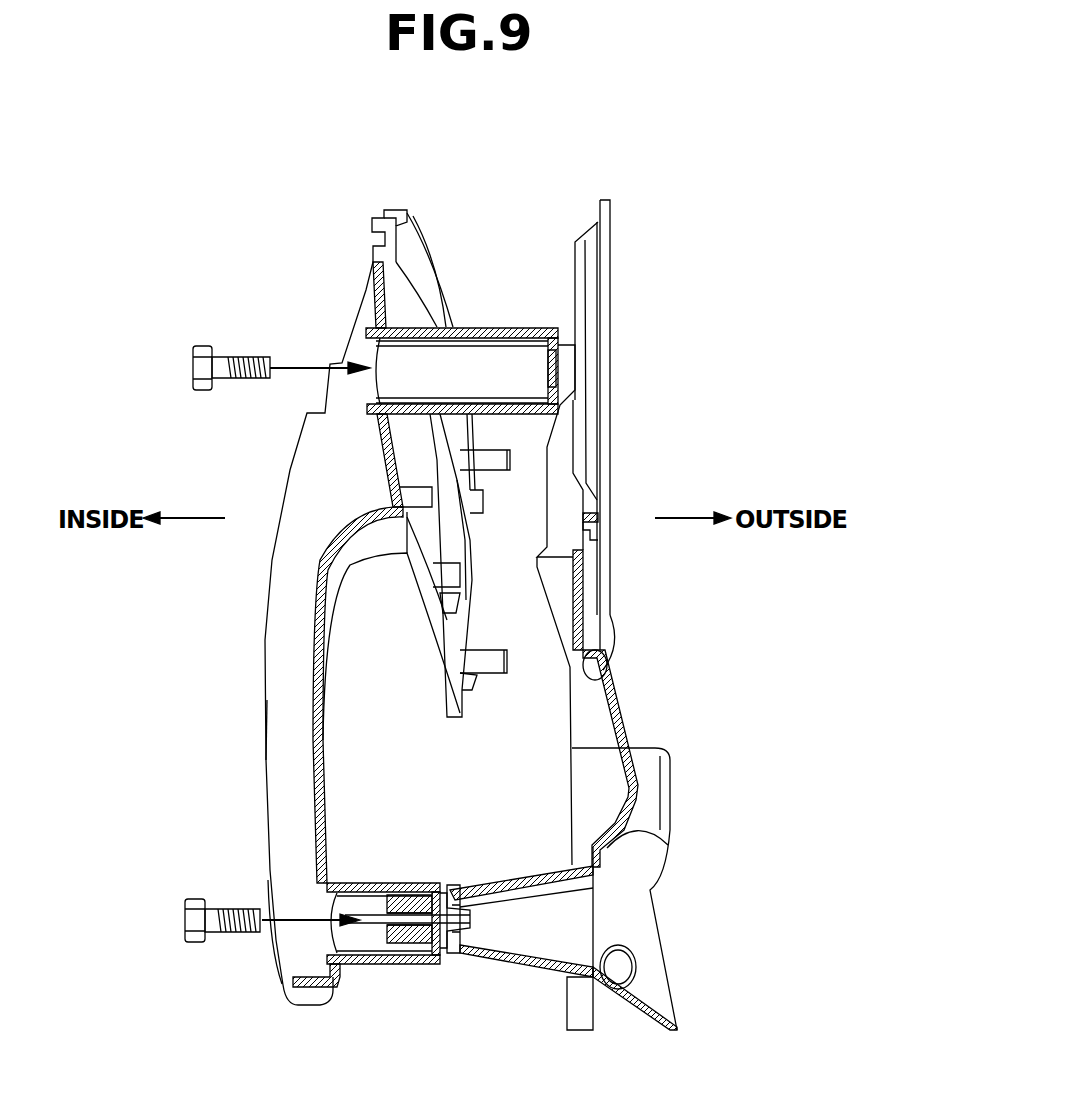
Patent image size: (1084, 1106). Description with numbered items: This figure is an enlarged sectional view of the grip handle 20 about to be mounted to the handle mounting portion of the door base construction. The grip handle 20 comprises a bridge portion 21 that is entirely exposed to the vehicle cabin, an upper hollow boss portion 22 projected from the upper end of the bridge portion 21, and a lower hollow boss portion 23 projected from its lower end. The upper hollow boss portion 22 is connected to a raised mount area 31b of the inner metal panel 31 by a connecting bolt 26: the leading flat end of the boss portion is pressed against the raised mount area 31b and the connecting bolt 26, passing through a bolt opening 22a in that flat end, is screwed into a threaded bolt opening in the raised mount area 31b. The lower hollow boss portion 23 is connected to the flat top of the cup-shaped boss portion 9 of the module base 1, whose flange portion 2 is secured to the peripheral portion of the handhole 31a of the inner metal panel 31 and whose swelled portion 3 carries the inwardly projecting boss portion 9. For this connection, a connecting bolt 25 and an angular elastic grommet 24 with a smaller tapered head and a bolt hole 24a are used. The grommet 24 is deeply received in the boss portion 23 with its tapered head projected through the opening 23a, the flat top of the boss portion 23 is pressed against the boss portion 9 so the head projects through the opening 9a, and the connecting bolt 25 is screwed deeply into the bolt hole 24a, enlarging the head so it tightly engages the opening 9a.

The module base 1 is at (622, 745).
The flange portion 2 is at (590, 527).
The swelled portion 3 is at (572, 749).
The cup-shaped boss portion 9 is at (500, 970).
The opening 9a is at (460, 953).
The grip handle 20 is at (262, 733).
The bridge portion 21 is at (268, 600).
The upper hollow boss portion 22 is at (473, 327).
The bolt opening 22a is at (560, 372).
The lower hollow boss portion 23 is at (388, 965).
The opening 23a is at (436, 898).
The angular elastic grommet 24 is at (385, 928).
The bolt hole 24a is at (410, 893).
The connecting bolt 25 is at (183, 920).
The connecting bolt 26 is at (193, 370).
The inner metal panel 31 is at (610, 222).
The handhole 31a is at (595, 665).
The raised mount area 31b is at (548, 350).